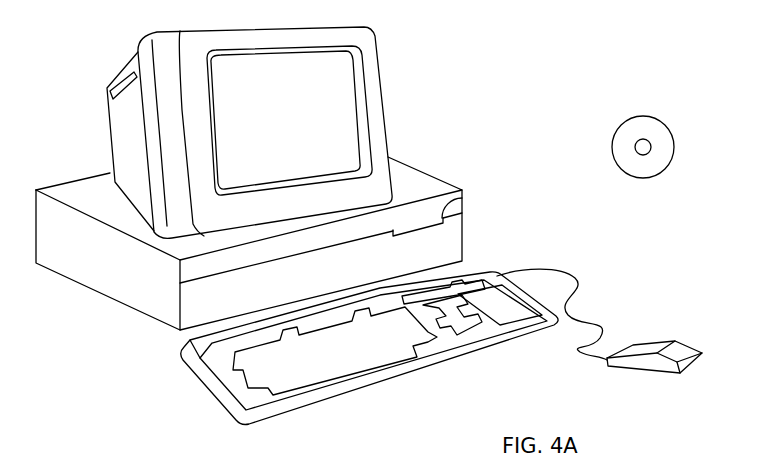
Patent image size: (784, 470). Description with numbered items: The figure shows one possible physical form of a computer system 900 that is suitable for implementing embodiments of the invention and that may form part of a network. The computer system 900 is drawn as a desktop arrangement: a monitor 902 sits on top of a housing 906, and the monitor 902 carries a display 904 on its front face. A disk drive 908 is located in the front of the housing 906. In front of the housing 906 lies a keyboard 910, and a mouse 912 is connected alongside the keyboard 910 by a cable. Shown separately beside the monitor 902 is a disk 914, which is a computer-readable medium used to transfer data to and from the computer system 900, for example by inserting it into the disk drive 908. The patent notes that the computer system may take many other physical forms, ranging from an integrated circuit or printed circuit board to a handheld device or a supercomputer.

The computer system 900 is at (557, 45).
The monitor 902 is at (387, 128).
The display 904 is at (348, 85).
The housing 906 is at (143, 315).
The disk drive 908 is at (463, 193).
The keyboard 910 is at (377, 383).
The mouse 912 is at (690, 345).
The disk 914 is at (657, 117).